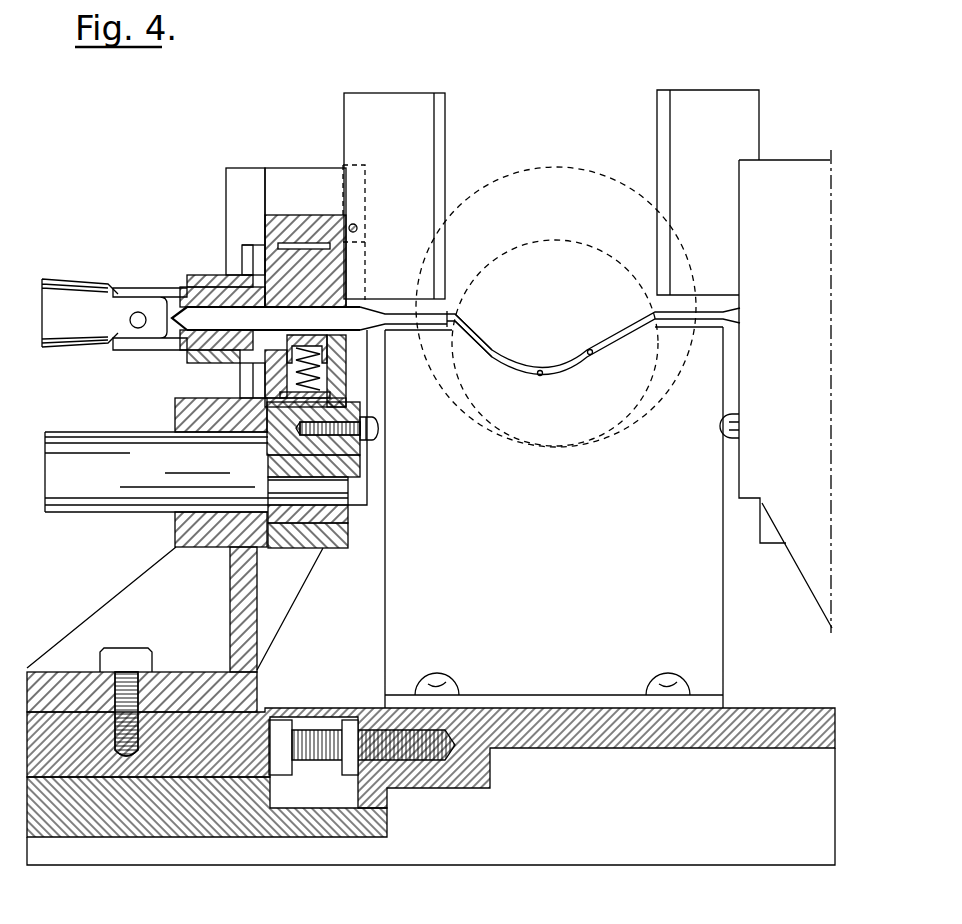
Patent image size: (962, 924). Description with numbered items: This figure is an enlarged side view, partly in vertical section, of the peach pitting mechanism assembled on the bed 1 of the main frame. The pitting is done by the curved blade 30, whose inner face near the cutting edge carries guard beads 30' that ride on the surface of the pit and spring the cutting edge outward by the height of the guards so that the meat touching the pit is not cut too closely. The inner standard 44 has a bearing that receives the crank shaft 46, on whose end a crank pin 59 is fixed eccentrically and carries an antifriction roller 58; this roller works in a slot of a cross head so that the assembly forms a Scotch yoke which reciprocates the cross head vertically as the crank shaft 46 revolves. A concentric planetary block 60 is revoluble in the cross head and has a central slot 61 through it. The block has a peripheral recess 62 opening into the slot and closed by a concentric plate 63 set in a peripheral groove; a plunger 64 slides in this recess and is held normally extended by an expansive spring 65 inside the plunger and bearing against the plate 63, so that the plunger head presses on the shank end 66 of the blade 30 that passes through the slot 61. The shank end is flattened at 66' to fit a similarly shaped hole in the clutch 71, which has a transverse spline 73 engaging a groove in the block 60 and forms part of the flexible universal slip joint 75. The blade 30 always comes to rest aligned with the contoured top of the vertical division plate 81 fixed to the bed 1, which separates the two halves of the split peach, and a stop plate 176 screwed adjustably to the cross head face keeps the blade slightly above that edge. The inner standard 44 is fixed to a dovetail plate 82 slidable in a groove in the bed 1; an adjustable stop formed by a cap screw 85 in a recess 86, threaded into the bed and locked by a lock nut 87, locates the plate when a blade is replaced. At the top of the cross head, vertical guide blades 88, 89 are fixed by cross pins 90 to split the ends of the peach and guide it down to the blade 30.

The bed 1 is at (592, 749).
The curved blade 30 is at (593, 350).
The guard beads 30' is at (490, 329).
The inner standard 44 is at (122, 599).
The crank shaft 46 is at (127, 440).
The antifriction roller 58 is at (349, 514).
The crank pin 59 is at (308, 491).
The planetary block 60 is at (349, 270).
The central slot 61 is at (388, 320).
The peripheral recess 62 is at (329, 386).
The concentric plate 63 is at (360, 398).
The plunger 64 is at (328, 364).
The expansive spring 65 is at (243, 384).
The shank end 66 is at (266, 320).
The flattened portion of shank end 66' is at (222, 304).
The clutch 71 is at (178, 292).
The transverse spline 73 is at (247, 253).
The flexible universal slip joint 75 is at (85, 288).
The vertical division plate 81 is at (385, 646).
The dovetail plate 82 is at (272, 710).
The cap screw 85 is at (303, 764).
The recess 86 is at (298, 834).
The lock nut 87 is at (350, 772).
The vertical guide blade 88 is at (414, 97).
The vertical guide blade 89 is at (717, 97).
The cross pin 90 is at (376, 232).
The stop plate 176 is at (361, 462).